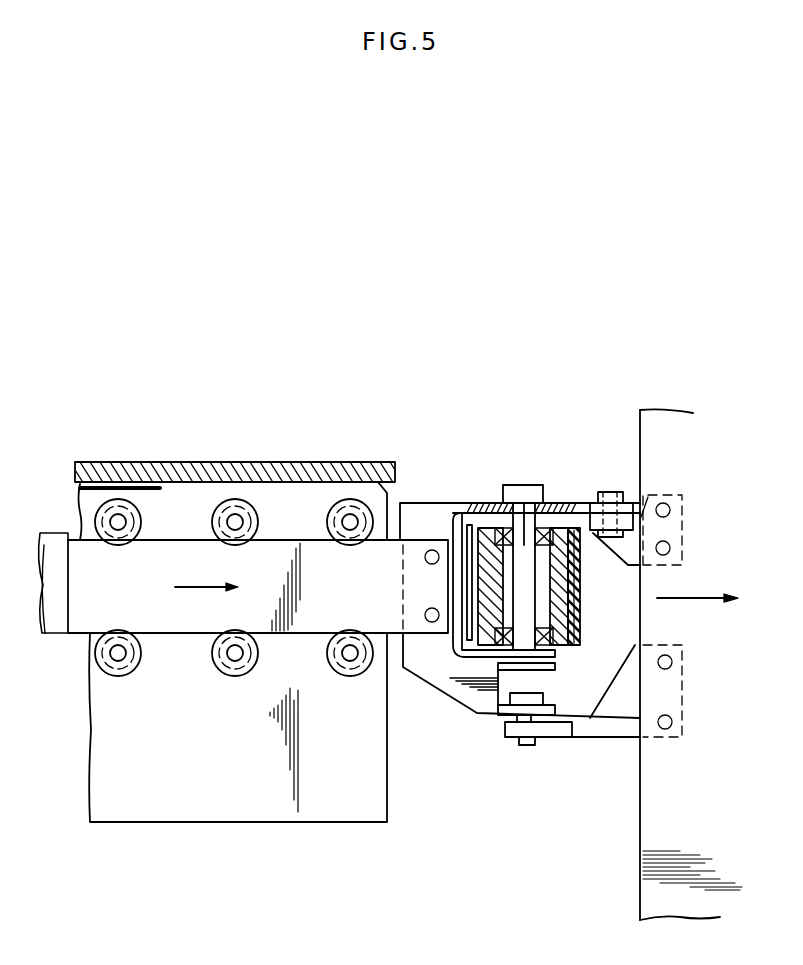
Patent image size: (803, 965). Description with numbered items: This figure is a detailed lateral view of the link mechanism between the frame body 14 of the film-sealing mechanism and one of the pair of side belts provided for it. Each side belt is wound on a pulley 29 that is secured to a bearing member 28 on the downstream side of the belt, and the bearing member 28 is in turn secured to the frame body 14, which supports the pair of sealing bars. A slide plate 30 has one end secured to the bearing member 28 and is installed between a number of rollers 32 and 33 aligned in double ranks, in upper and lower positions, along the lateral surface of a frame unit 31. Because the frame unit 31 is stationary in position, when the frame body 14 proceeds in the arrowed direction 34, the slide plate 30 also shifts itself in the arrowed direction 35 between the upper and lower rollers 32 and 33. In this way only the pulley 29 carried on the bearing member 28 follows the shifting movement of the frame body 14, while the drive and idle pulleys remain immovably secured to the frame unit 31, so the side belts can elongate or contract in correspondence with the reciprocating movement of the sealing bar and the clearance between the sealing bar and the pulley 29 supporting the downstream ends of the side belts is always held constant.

The frame body 14 is at (660, 815).
The bearing member 28 is at (468, 700).
The pulley 29 is at (558, 645).
The slide plate 30 is at (70, 578).
The frame unit 31 is at (78, 462).
The rollers 32 is at (178, 517).
The rollers 33 is at (222, 672).
The arrowed direction 34 is at (700, 592).
The arrowed direction 35 is at (186, 580).